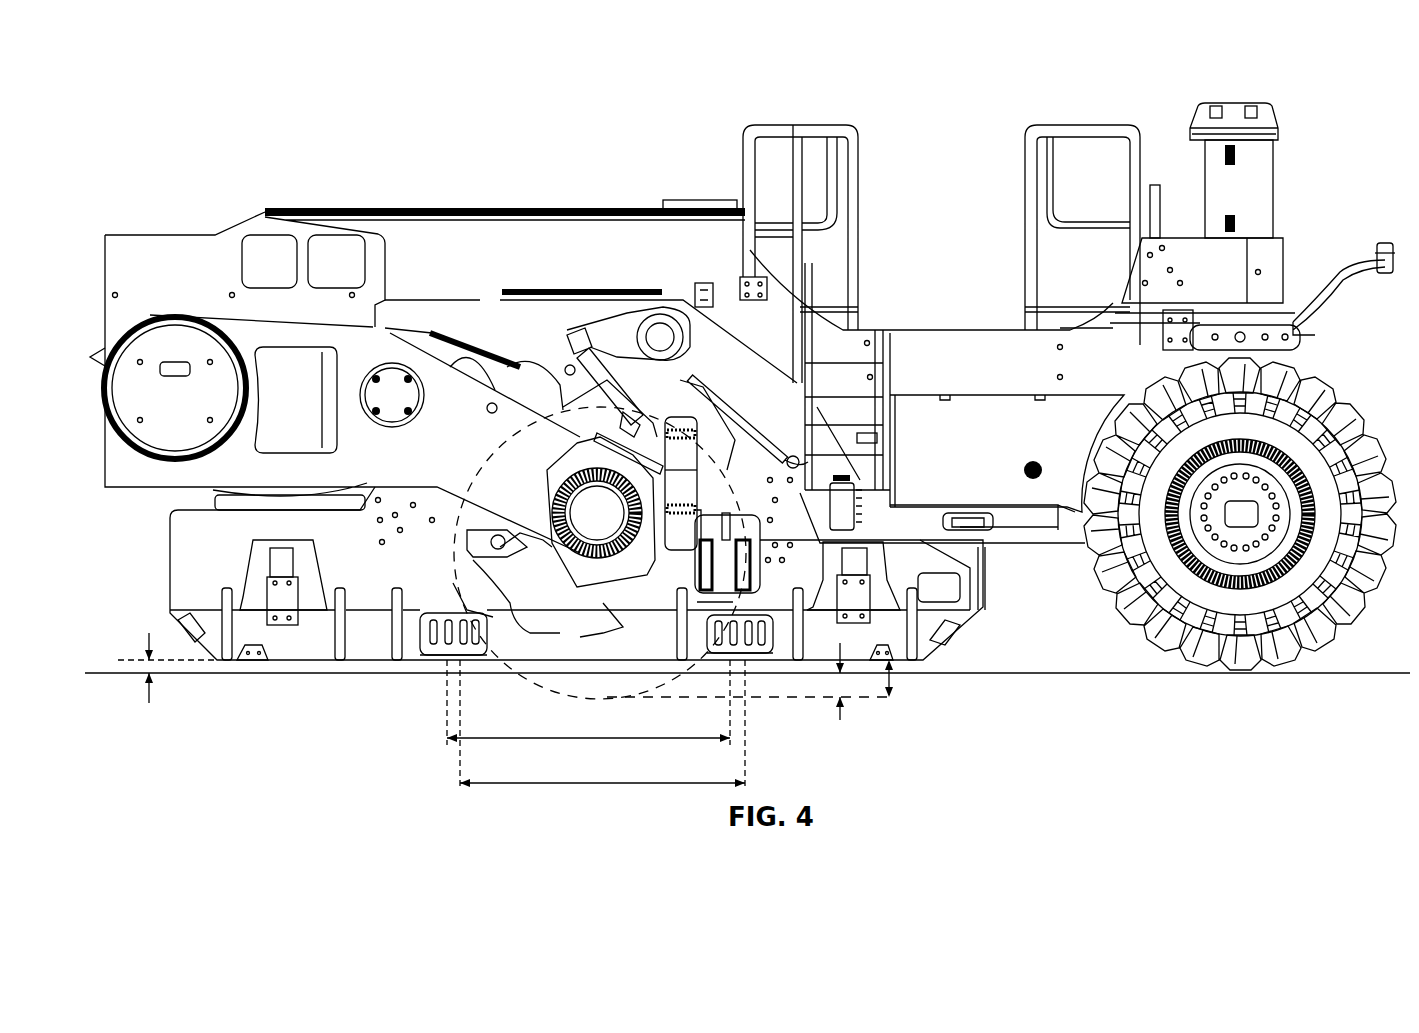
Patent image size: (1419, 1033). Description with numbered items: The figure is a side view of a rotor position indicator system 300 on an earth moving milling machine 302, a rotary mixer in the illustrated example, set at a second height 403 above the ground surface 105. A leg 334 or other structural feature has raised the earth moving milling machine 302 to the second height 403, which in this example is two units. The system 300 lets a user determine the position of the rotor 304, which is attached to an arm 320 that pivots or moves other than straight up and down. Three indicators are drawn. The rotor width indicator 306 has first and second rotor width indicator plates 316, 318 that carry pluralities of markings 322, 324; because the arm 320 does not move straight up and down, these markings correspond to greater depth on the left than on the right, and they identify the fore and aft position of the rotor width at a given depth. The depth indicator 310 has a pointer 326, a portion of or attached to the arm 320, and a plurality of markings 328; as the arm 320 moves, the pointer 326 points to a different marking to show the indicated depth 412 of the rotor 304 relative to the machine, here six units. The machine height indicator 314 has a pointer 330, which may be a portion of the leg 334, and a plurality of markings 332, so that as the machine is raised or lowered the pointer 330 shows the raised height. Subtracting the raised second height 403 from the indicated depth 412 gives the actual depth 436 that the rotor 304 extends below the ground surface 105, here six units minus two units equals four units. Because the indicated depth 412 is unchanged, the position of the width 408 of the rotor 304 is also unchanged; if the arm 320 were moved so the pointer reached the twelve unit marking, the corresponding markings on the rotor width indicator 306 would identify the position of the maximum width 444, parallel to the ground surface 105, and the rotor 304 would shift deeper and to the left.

The ground surface 105 is at (128, 668).
The rotor position indicator system 300 is at (215, 82).
The earth moving milling machine 302 is at (683, 300).
The rotor 304 is at (562, 410).
The rotor width indicator 306 is at (384, 634).
The depth indicator 310 is at (688, 414).
The machine height indicator 314 is at (1150, 306).
The first rotor width indicator plate 316 is at (433, 656).
The second rotor width indicator plate 318 is at (753, 660).
The arm 320 is at (423, 355).
The markings 322 is at (465, 613).
The markings 324 is at (733, 612).
The pointer 326 is at (577, 445).
The markings 328 is at (733, 437).
The pointer 330 is at (1222, 323).
The markings 332 is at (1183, 323).
The leg 334 is at (1278, 353).
The second height 403 is at (142, 690).
The width 408 is at (607, 782).
The indicated depth 412 is at (895, 680).
The actual depth 436 is at (843, 710).
The maximum width 444 is at (590, 737).